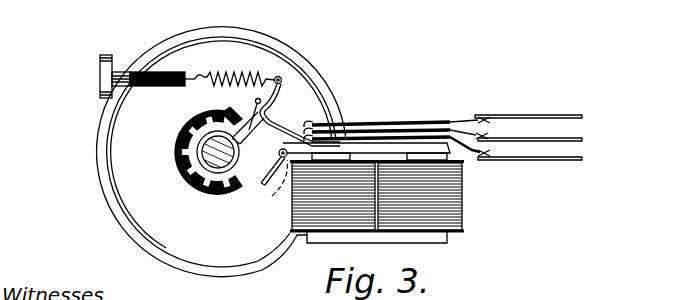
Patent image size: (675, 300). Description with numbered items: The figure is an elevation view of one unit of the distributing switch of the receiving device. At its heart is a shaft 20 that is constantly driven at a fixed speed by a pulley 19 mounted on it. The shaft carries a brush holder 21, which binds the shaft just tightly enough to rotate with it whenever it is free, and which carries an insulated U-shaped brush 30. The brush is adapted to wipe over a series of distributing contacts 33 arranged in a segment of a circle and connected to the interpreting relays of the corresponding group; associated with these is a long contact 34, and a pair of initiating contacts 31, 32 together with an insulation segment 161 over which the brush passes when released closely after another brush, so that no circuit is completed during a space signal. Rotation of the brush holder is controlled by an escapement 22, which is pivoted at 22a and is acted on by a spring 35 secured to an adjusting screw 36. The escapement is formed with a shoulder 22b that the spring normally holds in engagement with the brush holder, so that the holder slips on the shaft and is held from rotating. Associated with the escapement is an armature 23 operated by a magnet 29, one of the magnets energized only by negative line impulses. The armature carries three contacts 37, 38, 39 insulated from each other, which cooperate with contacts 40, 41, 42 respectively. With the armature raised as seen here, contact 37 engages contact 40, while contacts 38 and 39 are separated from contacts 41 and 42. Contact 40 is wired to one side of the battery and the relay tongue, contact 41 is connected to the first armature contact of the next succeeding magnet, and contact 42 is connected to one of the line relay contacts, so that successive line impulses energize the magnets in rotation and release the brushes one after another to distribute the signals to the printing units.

The pulley 19 is at (210, 27).
The insulation segment 161 is at (118, 122).
The adjusting screw 36 is at (100, 70).
The spring 35 is at (247, 72).
The shoulder 22b is at (281, 77).
The escapement 22 is at (274, 123).
The U-shaped brush 30 is at (241, 107).
The brush holder 21 is at (216, 101).
The shaft 20 is at (218, 151).
The initiating contact 31 is at (192, 113).
The initiating contact 32 is at (186, 126).
The long contact 34 is at (176, 153).
The distributing contacts 33 is at (222, 200).
The pivot 22a is at (272, 198).
The armature 23 is at (450, 148).
The magnet 29 is at (466, 222).
The contact 37 is at (446, 120).
The contact 38 is at (451, 120).
The contact 39 is at (462, 136).
The contact 40 is at (540, 115).
The contact 41 is at (573, 140).
The contact 42 is at (570, 160).